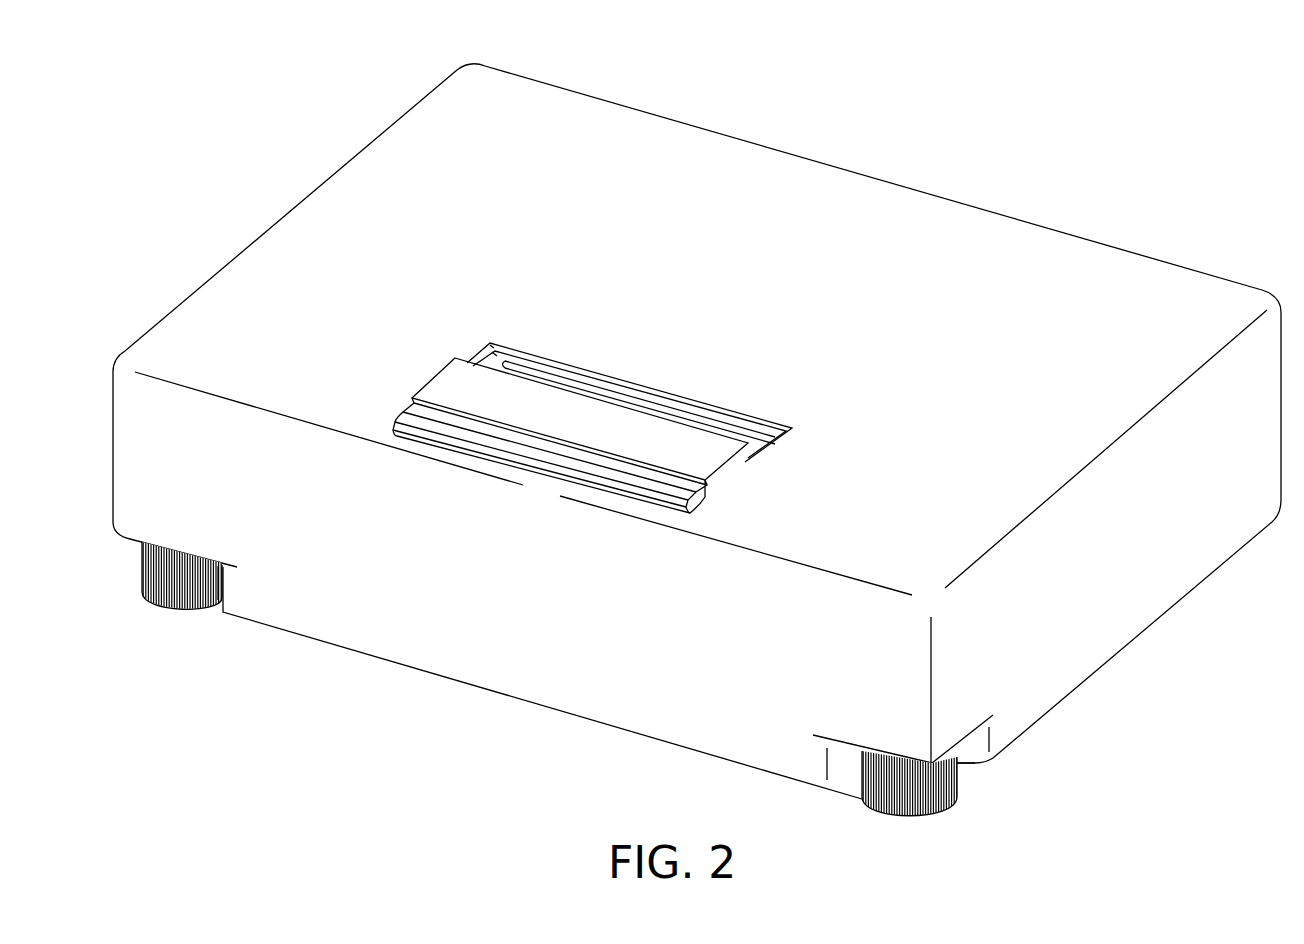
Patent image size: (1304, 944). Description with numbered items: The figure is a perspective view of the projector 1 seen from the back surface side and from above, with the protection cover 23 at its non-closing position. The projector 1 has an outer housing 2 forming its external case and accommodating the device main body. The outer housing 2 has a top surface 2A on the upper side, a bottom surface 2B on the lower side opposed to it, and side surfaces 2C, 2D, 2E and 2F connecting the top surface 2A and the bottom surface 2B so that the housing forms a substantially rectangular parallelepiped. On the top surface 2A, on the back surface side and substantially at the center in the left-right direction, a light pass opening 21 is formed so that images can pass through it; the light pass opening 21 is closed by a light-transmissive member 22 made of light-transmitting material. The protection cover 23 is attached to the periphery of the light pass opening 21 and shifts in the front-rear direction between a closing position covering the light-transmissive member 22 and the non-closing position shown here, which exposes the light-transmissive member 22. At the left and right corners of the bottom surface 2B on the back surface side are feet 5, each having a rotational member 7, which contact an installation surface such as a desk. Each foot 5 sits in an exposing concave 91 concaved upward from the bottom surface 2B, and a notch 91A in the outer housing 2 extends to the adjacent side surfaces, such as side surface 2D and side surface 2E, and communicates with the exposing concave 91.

The projector 1 is at (194, 170).
The outer housing 2 is at (605, 128).
The top surface 2A is at (837, 190).
The bottom surface 2B is at (1090, 683).
The side surface 2C is at (984, 210).
The side surface 2D is at (565, 690).
The side surface 2E is at (1138, 597).
The side surface 2F is at (242, 252).
The light pass opening 21 is at (515, 363).
The light-transmissive member 22 is at (597, 392).
The protection cover 23 is at (708, 455).
The exposing concave 91 is at (130, 540).
The notch 91A is at (206, 606).
The foot 5 is at (576, 704).
The rotational member 7 is at (155, 606).